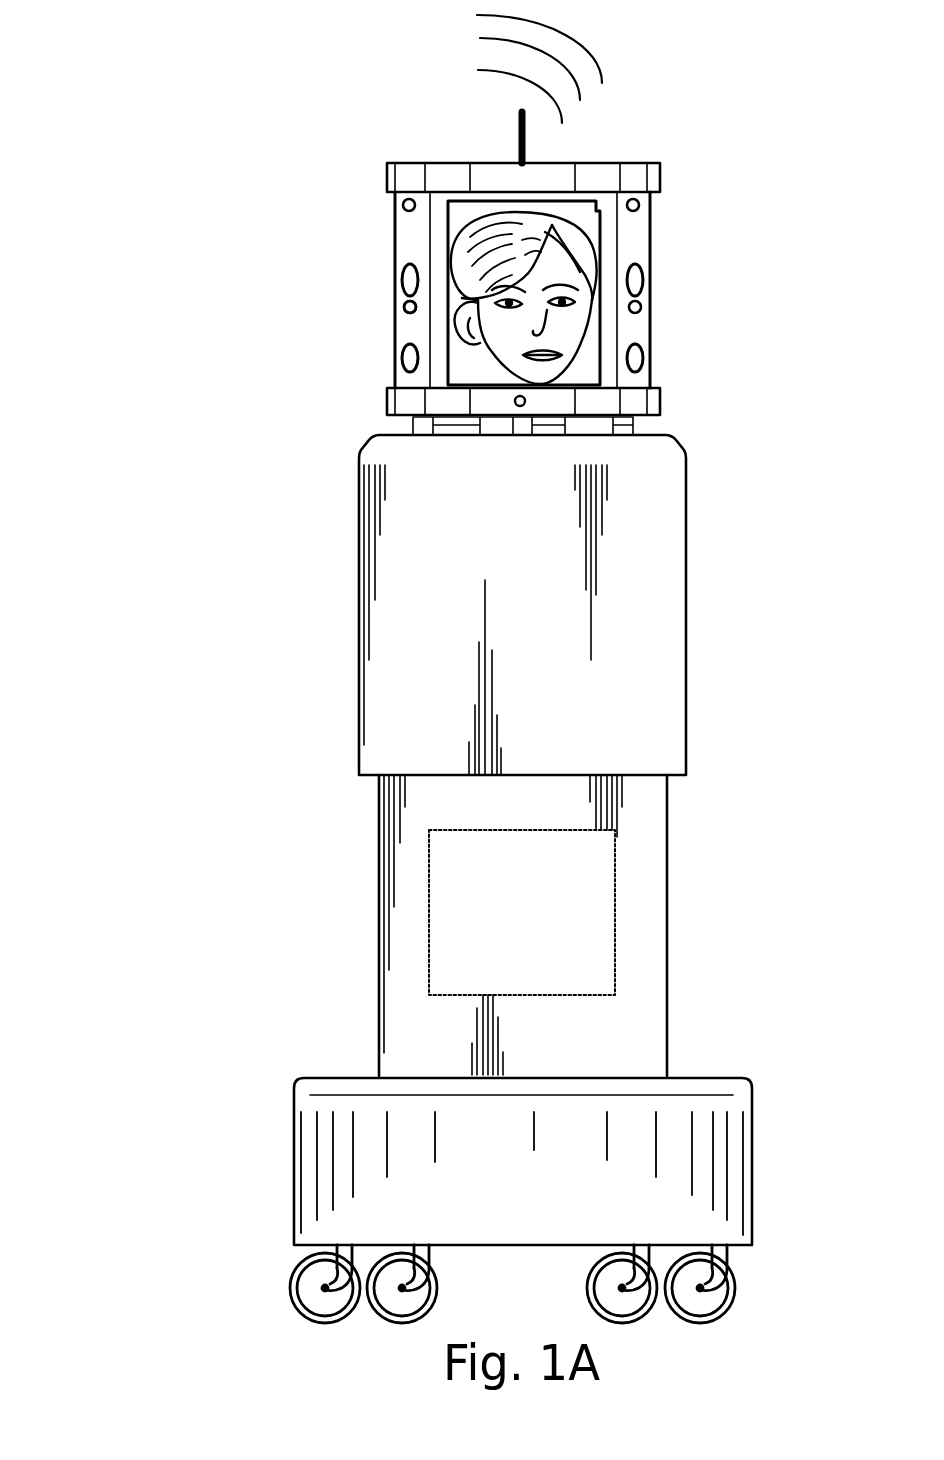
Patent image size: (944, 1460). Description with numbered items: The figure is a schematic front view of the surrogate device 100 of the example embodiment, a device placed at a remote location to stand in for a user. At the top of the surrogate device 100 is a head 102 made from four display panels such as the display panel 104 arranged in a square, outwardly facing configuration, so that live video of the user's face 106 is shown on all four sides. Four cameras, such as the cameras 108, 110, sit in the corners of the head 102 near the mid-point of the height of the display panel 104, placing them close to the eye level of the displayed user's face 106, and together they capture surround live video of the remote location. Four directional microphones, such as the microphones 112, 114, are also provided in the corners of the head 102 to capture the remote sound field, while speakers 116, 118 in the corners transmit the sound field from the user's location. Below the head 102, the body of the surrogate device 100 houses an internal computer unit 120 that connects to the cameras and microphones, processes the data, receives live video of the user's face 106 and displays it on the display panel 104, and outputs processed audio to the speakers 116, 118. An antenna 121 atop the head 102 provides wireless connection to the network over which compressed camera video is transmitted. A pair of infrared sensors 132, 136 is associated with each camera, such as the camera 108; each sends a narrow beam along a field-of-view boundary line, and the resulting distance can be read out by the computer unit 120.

The surrogate device 100 is at (200, 577).
The head 102 is at (688, 334).
The display panel 104 is at (462, 213).
The user's face 106 is at (510, 362).
The camera 108 is at (386, 298).
The camera 110 is at (660, 288).
The directional microphone 112 is at (387, 217).
The directional microphone 114 is at (658, 213).
The speaker 116 is at (386, 369).
The speaker 118 is at (660, 367).
The internal computer unit 120 is at (418, 919).
The antenna 121 is at (540, 122).
The infrared sensor 132 is at (386, 317).
The infrared sensor 136 is at (427, 336).